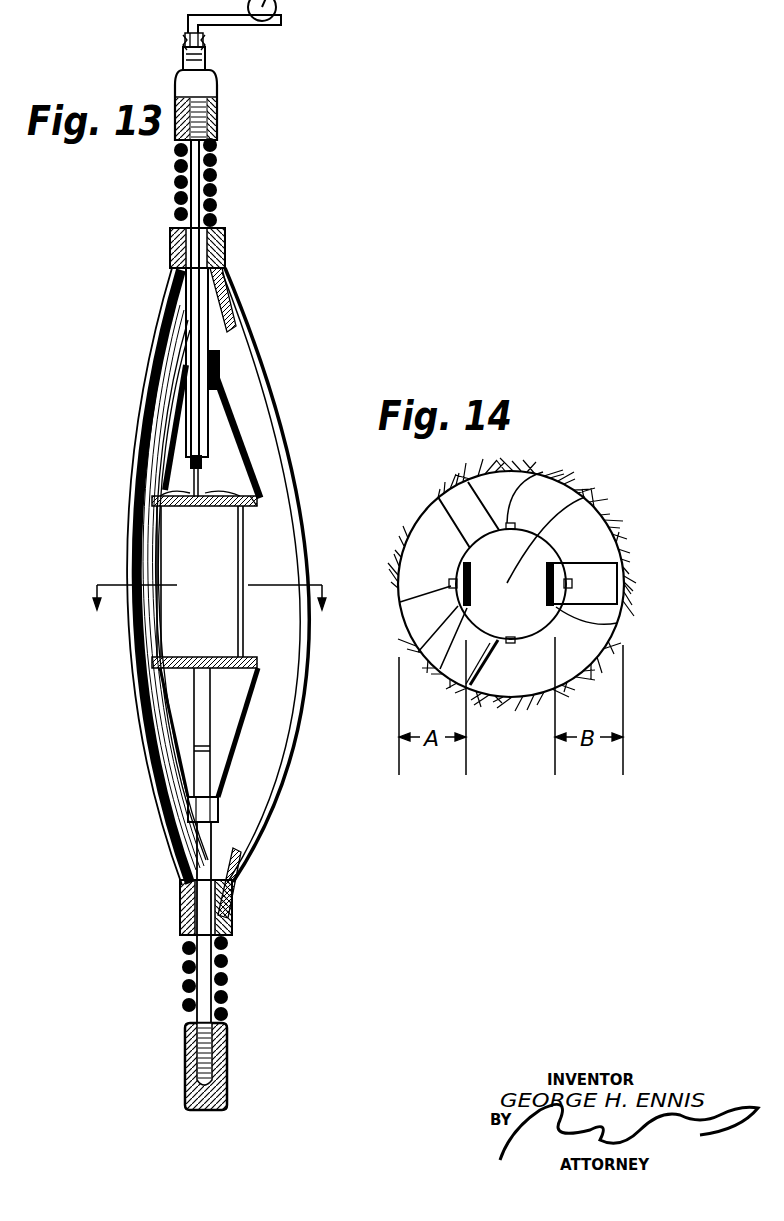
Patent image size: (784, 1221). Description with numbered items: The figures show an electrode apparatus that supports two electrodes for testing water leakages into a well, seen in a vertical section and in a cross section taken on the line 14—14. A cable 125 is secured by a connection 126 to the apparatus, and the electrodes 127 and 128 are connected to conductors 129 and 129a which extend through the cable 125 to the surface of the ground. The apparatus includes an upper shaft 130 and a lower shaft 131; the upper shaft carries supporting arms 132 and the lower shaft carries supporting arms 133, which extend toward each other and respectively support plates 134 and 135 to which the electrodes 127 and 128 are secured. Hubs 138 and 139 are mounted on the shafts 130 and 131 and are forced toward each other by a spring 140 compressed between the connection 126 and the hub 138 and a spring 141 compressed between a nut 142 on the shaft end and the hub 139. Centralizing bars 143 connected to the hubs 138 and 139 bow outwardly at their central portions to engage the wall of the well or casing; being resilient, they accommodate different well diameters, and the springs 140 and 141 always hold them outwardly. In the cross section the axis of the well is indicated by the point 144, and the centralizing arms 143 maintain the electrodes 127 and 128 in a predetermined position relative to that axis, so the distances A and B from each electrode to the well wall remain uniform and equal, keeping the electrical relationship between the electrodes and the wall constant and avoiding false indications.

In FIG. 13, the cable 125 is at (204, 47).
In FIG. 13, the connection 126 is at (217, 88).
In FIG. 13, the electrode 127 is at (140, 536).
In FIG. 14, the electrode 127 is at (400, 648).
In FIG. 13, the electrode 128 is at (240, 549).
In FIG. 14, the electrode 128 is at (622, 637).
In FIG. 13, the conductor 129 is at (170, 480).
In FIG. 13, the conductor 129a is at (236, 478).
In FIG. 13, the upper shaft 130 is at (191, 196).
In FIG. 13, the lower shaft 131 is at (217, 868).
In FIG. 13, the supporting arms 132 is at (230, 406).
In FIG. 13, the supporting arms 133 is at (245, 735).
In FIG. 14, the supporting arms 133 is at (550, 470).
In FIG. 13, the plate 134 is at (160, 492).
In FIG. 13, the plate 135 is at (157, 676).
In FIG. 14, the plate 135 is at (482, 558).
In FIG. 13, the hub 138 is at (224, 248).
In FIG. 13, the hub 139 is at (186, 905).
In FIG. 13, the spring 140 is at (216, 150).
In FIG. 13, the spring 141 is at (186, 970).
In FIG. 13, the nut 142 is at (228, 1077).
In FIG. 13, the centralizing bars 143 is at (233, 328).
In FIG. 14, the centralizing bars 143 is at (450, 480).
In FIG. 14, the axis of the well 144 is at (597, 503).
In FIG. 13, the section line 14 is at (208, 593).